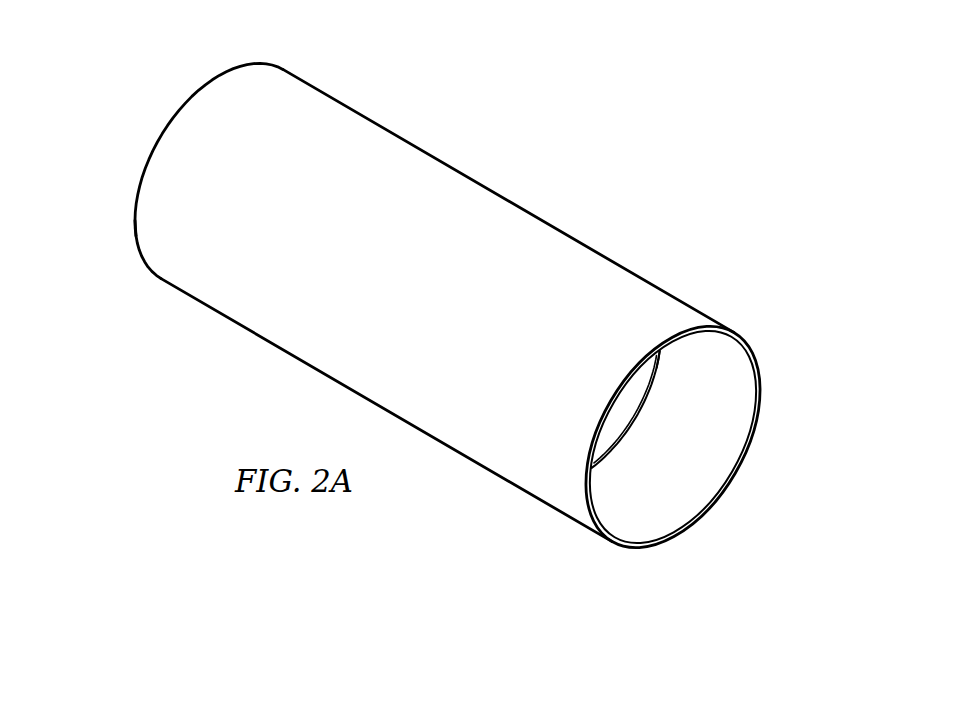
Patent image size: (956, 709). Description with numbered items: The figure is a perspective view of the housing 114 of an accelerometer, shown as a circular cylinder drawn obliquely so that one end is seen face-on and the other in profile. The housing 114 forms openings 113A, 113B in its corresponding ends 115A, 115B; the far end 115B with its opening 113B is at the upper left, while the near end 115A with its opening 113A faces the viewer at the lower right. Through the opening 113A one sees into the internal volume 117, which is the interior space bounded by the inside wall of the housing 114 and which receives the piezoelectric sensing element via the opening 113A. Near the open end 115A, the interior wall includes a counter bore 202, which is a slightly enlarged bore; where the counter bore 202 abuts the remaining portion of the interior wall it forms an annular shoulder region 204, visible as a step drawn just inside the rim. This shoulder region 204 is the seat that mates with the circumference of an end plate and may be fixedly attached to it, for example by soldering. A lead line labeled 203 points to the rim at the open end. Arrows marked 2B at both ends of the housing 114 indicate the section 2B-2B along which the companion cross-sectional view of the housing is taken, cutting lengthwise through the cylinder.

The housing 114 is at (438, 158).
The second end 115B is at (232, 70).
The second opening 113B is at (130, 215).
The first end 115A is at (760, 360).
The first opening 113A is at (693, 442).
The internal volume 117 is at (602, 452).
The counter bore 202 is at (722, 378).
The outer edge of end 203 is at (650, 548).
The shoulder region 204 is at (663, 362).
The section 2B- 2B is at (132, 133).